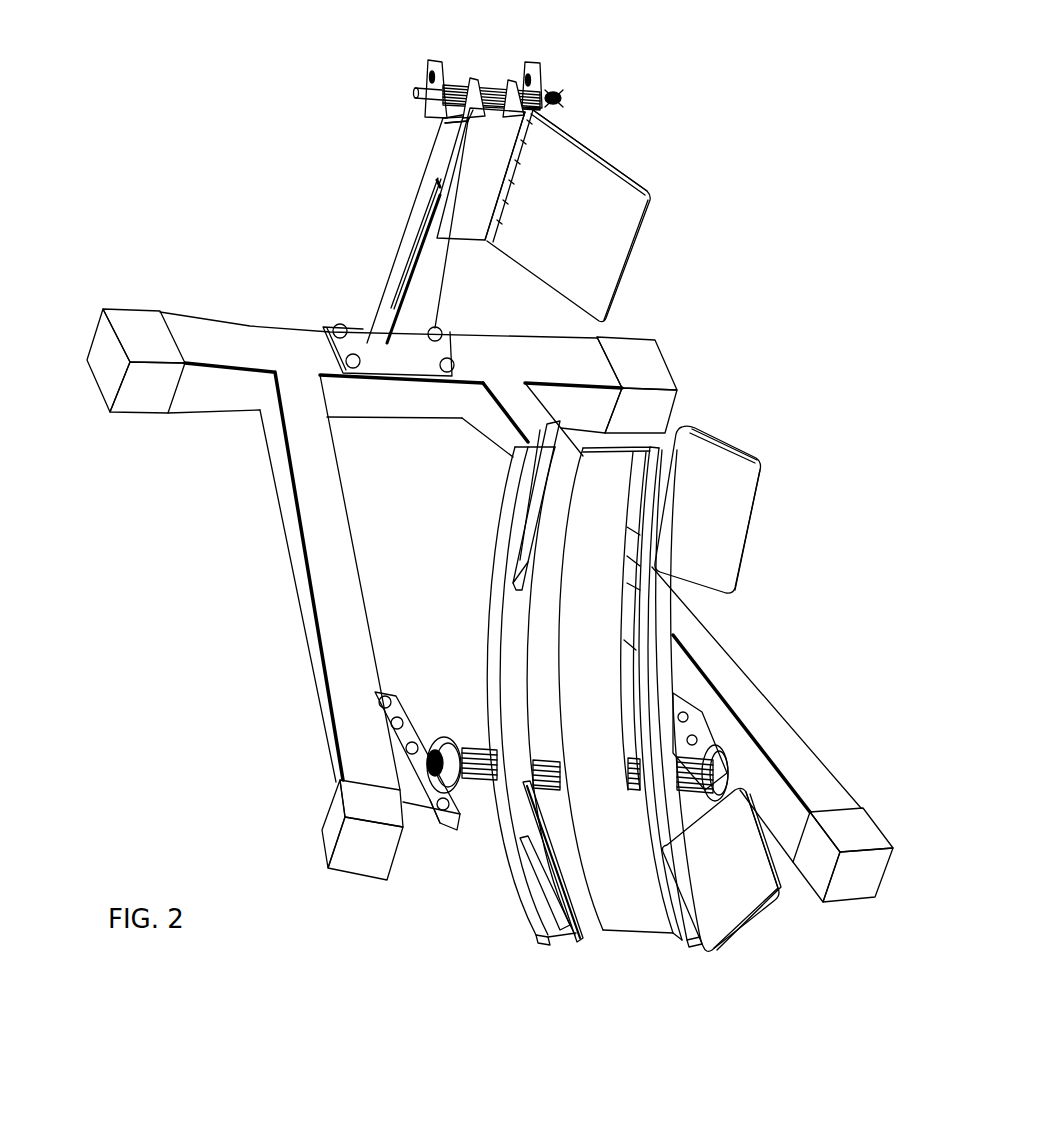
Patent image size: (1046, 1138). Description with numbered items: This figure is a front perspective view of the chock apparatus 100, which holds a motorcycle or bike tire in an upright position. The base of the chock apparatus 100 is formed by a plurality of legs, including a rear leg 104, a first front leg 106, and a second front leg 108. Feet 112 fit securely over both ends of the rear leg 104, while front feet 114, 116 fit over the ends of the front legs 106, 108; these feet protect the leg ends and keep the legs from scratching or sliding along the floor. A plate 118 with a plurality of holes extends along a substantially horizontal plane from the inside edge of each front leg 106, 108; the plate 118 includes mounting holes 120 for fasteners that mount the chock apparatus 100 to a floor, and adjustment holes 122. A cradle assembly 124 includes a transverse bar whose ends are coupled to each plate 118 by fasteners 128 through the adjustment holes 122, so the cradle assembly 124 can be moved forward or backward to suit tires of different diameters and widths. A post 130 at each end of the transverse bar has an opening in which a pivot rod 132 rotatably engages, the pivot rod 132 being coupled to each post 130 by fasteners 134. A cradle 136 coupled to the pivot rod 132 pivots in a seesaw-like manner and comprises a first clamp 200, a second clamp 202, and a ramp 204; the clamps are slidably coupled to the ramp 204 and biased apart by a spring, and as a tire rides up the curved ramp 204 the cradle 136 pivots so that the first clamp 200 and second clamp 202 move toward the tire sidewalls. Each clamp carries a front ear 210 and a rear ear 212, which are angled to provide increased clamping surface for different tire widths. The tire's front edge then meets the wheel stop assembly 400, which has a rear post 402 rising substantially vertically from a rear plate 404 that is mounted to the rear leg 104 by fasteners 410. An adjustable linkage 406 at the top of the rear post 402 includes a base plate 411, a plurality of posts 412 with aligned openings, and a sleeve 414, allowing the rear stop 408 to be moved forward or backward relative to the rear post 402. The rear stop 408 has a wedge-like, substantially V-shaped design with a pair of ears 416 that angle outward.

The chock apparatus 100 is at (133, 160).
The rear leg 104 is at (208, 330).
The first front leg 106 is at (800, 756).
The second front leg 108 is at (280, 457).
The feet 112 is at (133, 313).
The front foot 114 is at (876, 832).
The front foot 116 is at (333, 813).
The plate 118 is at (403, 702).
The mounting holes 120 is at (408, 802).
The adjustment holes 122 is at (380, 697).
The cradle assembly 124 is at (473, 920).
The fasteners 128 is at (393, 722).
The post 130 is at (457, 743).
The pivot rod 132 is at (428, 760).
The fasteners 134 is at (442, 810).
The cradle 136 is at (630, 963).
The first clamp 200 is at (505, 603).
The second clamp 202 is at (662, 605).
The ramp 204 is at (604, 688).
The front ear 210 is at (554, 915).
The rear ear 212 is at (540, 462).
The wheel stop assembly 400 is at (632, 144).
The rear post 402 is at (426, 338).
The rear plate 404 is at (375, 376).
The adjustable linkage 406 is at (405, 86).
The rear stop 408 is at (473, 257).
The fasteners 410 is at (435, 205).
The base plate 411 is at (443, 124).
The posts 412 is at (433, 60).
The sleeve 414 is at (497, 90).
The ears 416 is at (567, 216).